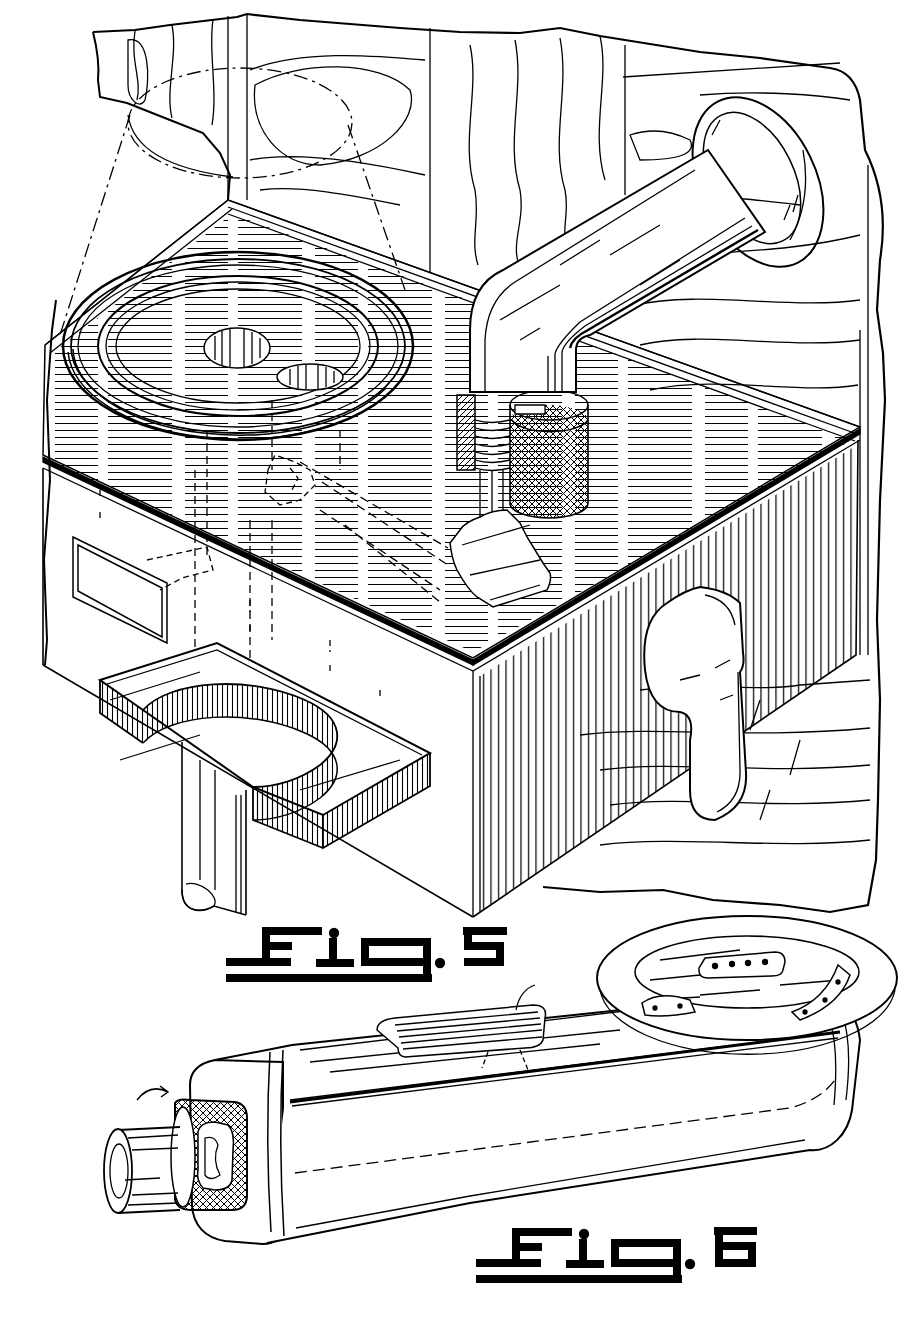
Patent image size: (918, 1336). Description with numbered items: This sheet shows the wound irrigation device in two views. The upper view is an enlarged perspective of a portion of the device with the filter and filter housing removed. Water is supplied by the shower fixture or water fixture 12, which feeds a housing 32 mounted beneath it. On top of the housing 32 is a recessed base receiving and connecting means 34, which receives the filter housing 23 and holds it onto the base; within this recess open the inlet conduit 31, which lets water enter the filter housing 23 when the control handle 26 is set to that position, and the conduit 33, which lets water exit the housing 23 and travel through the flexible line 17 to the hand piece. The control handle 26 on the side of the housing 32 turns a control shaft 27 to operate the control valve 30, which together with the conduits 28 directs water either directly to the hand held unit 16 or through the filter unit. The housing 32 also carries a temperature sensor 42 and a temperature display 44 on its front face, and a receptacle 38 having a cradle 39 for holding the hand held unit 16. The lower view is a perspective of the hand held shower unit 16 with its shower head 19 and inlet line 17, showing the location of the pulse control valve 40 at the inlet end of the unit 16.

In FIG. 5, the water fixture 12 is at (695, 197).
In FIG. 6, the hand held unit 16 is at (787, 1117).
In FIG. 5, the flexible line 17 is at (183, 857).
In FIG. 6, the flexible line 17 is at (123, 1183).
In FIG. 6, the shower head 19 is at (797, 962).
In FIG. 5, the filter housing 23 is at (98, 208).
In FIG. 5, the control handle 26 is at (707, 652).
In FIG. 5, the control shaft 27 is at (390, 508).
In FIG. 5, the conduits 28 is at (360, 503).
In FIG. 5, the control valve 30 is at (307, 493).
In FIG. 5, the inlet conduit 31 is at (313, 372).
In FIG. 5, the housing 32 is at (790, 531).
In FIG. 5, the conduit 33 is at (197, 357).
In FIG. 5, the recessed base receiving and connecting means 34 is at (197, 323).
In FIG. 5, the receptacle 38 is at (260, 745).
In FIG. 5, the cradle 39 is at (180, 747).
In FIG. 6, the pulse control valve 40 is at (185, 1100).
In FIG. 5, the temperature sensor 42 is at (160, 563).
In FIG. 5, the temperature display 44 is at (133, 617).